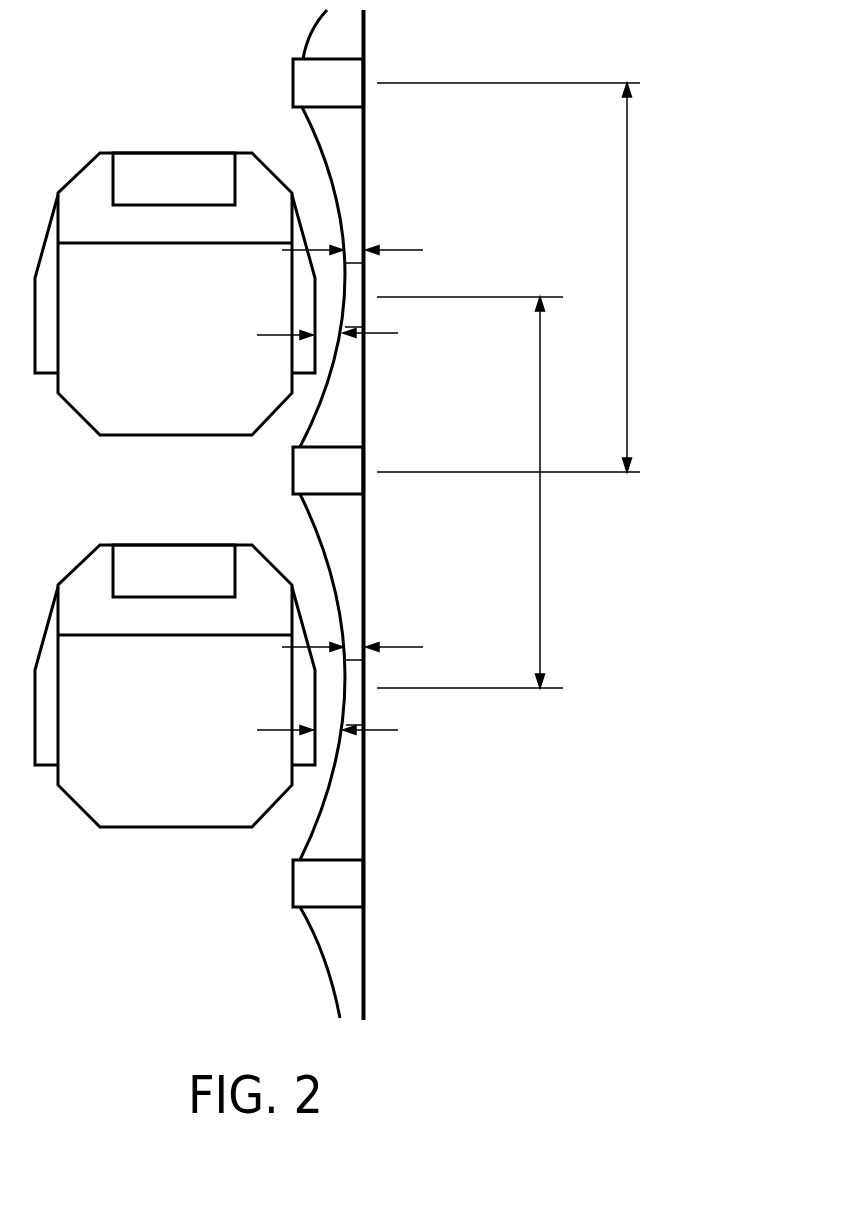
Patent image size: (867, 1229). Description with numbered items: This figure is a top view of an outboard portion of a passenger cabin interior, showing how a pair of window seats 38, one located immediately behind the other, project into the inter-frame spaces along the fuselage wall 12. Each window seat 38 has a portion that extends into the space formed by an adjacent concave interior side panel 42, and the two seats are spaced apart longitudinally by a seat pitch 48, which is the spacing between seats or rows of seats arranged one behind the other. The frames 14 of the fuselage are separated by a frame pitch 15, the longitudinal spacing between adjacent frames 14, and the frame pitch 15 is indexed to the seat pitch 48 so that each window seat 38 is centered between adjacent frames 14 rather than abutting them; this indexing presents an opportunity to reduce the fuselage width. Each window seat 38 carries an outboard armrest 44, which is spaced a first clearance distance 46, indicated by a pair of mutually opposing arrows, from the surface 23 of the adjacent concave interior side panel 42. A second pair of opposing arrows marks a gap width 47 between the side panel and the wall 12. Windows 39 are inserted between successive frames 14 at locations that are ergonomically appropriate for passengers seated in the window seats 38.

The wall 12 is at (365, 820).
The frame 14 is at (350, 87).
The frame pitch 15 is at (627, 198).
The surface 23 is at (267, 514).
The window seat 38 is at (153, 310).
The window 39 is at (350, 293).
The concave interior side panel 42 is at (320, 416).
The outboard armrest 44 is at (307, 364).
The first clearance distance 46 is at (325, 335).
The gap width 47 is at (352, 252).
The seat pitch 48 is at (540, 557).